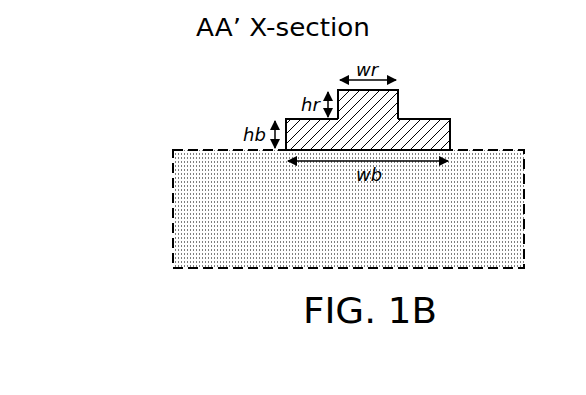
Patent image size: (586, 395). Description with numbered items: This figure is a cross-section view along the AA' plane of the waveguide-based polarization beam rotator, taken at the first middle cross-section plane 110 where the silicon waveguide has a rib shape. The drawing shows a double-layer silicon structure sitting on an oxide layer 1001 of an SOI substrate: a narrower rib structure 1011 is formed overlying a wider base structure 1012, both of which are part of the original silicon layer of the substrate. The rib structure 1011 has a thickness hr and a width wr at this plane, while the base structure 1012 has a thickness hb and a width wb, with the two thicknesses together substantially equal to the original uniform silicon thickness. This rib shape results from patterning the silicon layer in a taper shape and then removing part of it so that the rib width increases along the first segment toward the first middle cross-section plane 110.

The first middle cross-section plane 110 is at (399, 86).
The rib structure 1011 is at (432, 82).
The base structure 1012 is at (399, 120).
The oxide layer 1001 is at (524, 202).